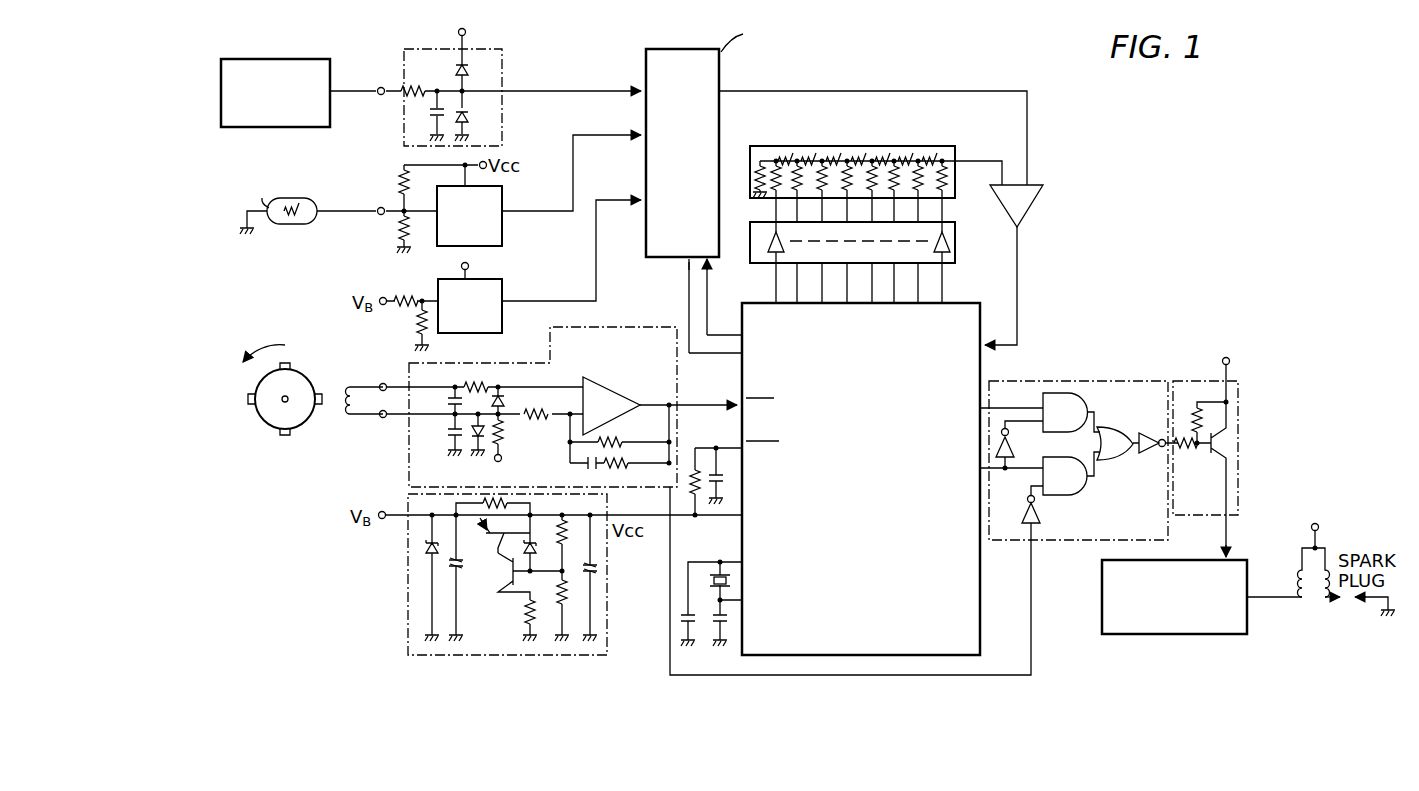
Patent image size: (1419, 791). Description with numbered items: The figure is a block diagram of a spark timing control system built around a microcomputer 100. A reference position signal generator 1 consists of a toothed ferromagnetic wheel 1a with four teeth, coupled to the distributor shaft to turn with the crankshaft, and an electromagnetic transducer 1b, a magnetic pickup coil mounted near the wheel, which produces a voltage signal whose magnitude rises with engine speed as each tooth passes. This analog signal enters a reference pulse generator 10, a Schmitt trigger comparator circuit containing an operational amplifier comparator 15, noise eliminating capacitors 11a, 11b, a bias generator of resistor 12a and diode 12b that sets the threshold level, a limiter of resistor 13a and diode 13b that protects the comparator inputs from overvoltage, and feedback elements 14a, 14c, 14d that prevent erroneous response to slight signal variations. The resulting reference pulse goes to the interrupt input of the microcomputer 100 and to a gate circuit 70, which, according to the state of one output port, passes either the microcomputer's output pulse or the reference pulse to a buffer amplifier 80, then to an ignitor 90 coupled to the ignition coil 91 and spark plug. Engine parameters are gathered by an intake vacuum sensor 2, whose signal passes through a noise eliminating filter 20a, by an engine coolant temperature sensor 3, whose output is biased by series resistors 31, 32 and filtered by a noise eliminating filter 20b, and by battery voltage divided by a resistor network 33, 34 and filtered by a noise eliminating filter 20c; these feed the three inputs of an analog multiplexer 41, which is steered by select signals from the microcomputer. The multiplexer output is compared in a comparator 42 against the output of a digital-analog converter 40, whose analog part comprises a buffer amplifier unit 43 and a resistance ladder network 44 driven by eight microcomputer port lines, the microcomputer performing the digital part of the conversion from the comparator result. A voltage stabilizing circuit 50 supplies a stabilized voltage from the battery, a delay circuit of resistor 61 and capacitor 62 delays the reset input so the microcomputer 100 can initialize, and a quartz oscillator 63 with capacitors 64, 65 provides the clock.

The reference position signal generator 1 is at (311, 432).
The toothed ferromagnetic wheel 1a is at (296, 428).
The electromagnetic transducer 1b is at (348, 418).
The intake vacuum sensor 2 is at (290, 59).
The engine coolant temperature sensor 3 is at (295, 224).
The reference pulse generator 10 is at (562, 402).
The noise eliminating capacitor 11a is at (453, 400).
The noise eliminating capacitor 11b is at (452, 437).
The resistor 12a is at (503, 441).
The diode 12b is at (475, 440).
The resistor 13a is at (484, 383).
The diode 13b is at (504, 404).
The resistance element 14a is at (558, 421).
The capacitance element 14c is at (603, 470).
The resistance element 14d is at (636, 448).
The operational amplifier comparator 15 is at (602, 385).
The noise eliminating filter 20a is at (490, 49).
The noise eliminating filter 20b is at (502, 192).
The noise eliminating filter 20c is at (502, 284).
The resistor 31 is at (401, 187).
The resistor 32 is at (400, 230).
The voltage dividing resistor 33 is at (403, 296).
The voltage dividing resistor 34 is at (412, 326).
The digital-analog converter 40 is at (824, 139).
The analog multiplexer 41 is at (678, 49).
The comparator 42 is at (1045, 191).
The buffer amplifier unit 43 is at (955, 243).
The resistance ladder network 44 is at (903, 146).
The voltage stabilizing circuit 50 is at (550, 658).
The resistor 61 is at (691, 497).
The capacitor 62 is at (719, 465).
The quartz oscillator 63 is at (710, 583).
The capacitor 64 is at (680, 614).
The capacitor 65 is at (728, 622).
The gate circuit 70 is at (1053, 381).
The buffer amplifier 80 is at (1178, 381).
The ignitor 90 is at (1190, 634).
The ignition coil 91 is at (1302, 597).
The microcomputer 100 is at (902, 631).